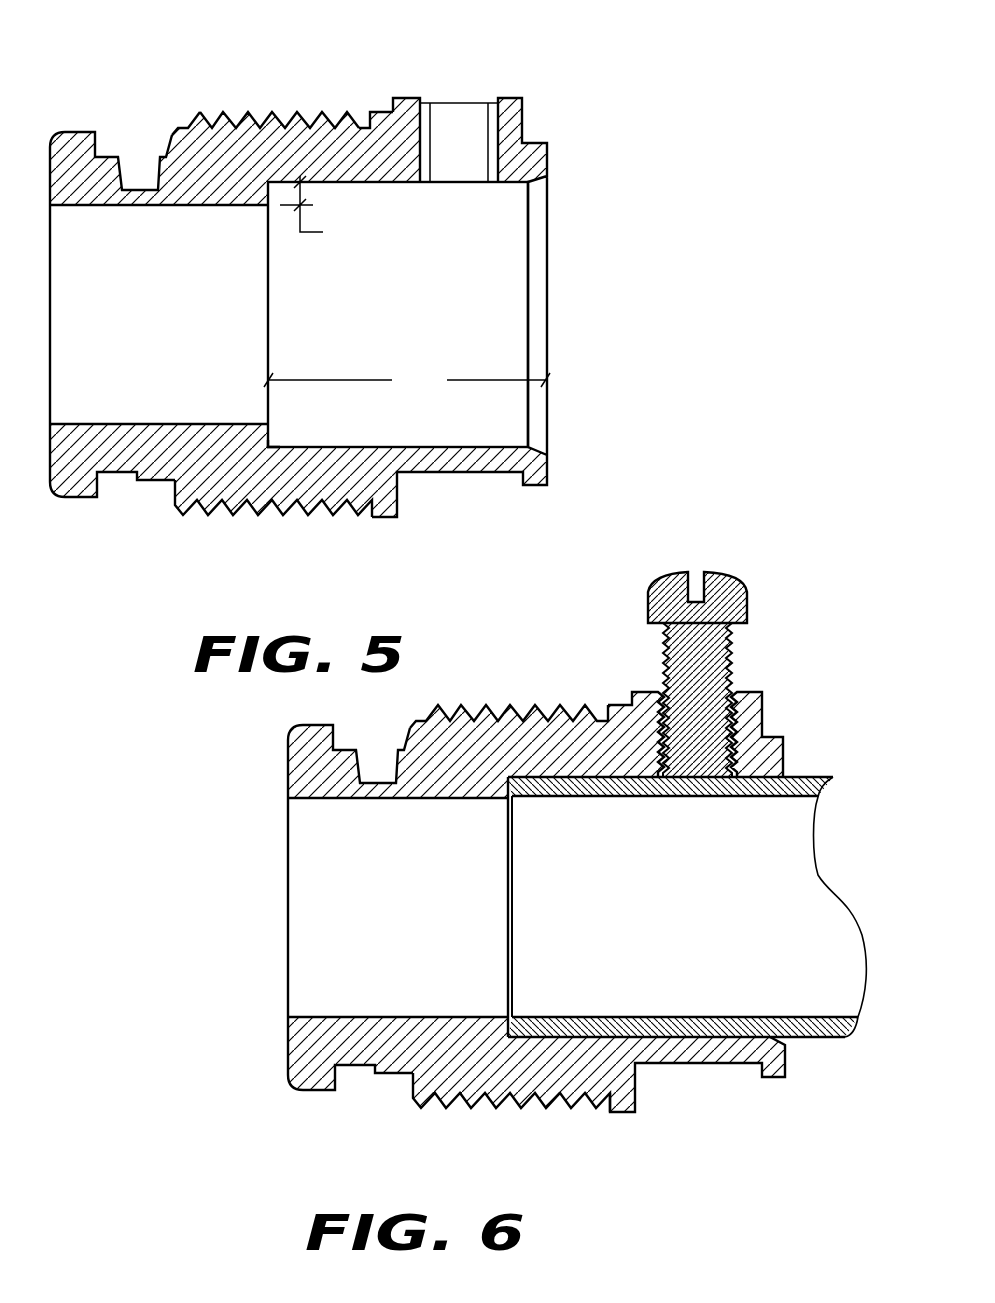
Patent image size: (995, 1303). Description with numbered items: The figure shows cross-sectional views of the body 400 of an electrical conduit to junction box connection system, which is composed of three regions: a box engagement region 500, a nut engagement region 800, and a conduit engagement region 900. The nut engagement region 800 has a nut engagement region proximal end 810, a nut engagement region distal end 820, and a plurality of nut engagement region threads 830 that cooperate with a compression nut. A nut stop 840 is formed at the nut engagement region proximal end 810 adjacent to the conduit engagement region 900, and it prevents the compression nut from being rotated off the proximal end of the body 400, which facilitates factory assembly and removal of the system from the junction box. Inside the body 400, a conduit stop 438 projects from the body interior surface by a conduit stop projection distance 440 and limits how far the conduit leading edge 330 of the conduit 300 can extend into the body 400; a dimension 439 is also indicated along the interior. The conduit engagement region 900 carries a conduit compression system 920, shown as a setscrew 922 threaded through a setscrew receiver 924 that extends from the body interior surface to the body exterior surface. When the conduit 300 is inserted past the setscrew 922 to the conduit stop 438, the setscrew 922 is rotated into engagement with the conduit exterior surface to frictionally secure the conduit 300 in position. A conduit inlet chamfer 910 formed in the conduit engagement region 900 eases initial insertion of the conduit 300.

In FIG. 6, the conduit 300 is at (815, 786).
In FIG. 6, the conduit leading edge 330 is at (514, 905).
In FIG. 5, the body 400 is at (407, 110).
In FIG. 6, the body 400 is at (441, 706).
In FIG. 5, the conduit stop 438 is at (270, 437).
In FIG. 6, the conduit stop 438 is at (508, 892).
In FIG. 5, the length dimension 439 is at (407, 381).
In FIG. 5, the conduit stop projection distance 440 is at (331, 211).
In FIG. 5, the box engagement region 500 is at (173, 505).
In FIG. 6, the box engagement region 500 is at (412, 1102).
In FIG. 5, the nut engagement region 800 is at (397, 538).
In FIG. 6, the nut engagement region 800 is at (635, 1132).
In FIG. 5, the nut engagement region proximal end 810 is at (371, 116).
In FIG. 5, the nut engagement region distal end 820 is at (188, 118).
In FIG. 5, the nut engagement region threads 830 is at (312, 119).
In FIG. 5, the nut stop 840 is at (340, 512).
In FIG. 5, the conduit engagement region 900 is at (547, 548).
In FIG. 6, the conduit engagement region 900 is at (785, 1145).
In FIG. 6, the conduit inlet chamfer 910 is at (784, 773).
In FIG. 6, the conduit compression system 920 is at (761, 647).
In FIG. 6, the setscrew 922 is at (747, 612).
In FIG. 6, the setscrew receiver 924 is at (743, 690).